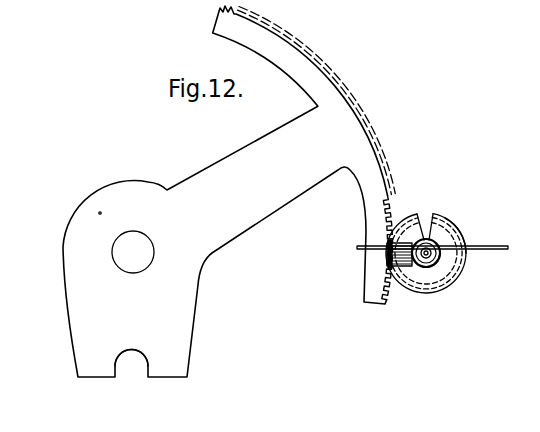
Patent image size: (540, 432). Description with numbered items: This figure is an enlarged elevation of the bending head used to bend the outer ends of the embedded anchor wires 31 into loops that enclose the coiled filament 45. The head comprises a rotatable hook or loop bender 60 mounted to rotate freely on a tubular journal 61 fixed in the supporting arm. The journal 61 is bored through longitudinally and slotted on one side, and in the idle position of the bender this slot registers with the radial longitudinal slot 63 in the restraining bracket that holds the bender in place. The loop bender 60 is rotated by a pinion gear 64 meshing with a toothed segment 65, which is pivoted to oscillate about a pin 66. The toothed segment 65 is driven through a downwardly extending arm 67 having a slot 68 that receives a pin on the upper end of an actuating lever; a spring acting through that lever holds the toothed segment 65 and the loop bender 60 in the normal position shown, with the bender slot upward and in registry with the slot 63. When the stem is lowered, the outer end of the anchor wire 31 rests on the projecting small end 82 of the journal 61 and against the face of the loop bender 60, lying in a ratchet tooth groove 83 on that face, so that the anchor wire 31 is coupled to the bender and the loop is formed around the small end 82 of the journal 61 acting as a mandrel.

The anchor wire 31 is at (506, 245).
The coiled filament 45 is at (424, 257).
The loop bender 60 is at (460, 277).
The tubular journal 61 is at (428, 267).
The radial longitudinal slot 63 is at (427, 226).
The pinion gear 64 is at (457, 232).
The toothed segment 65 is at (362, 142).
The pin 66 is at (138, 240).
The downwardly extending arm 67 is at (183, 347).
The slot 68 is at (133, 367).
The small end 82 is at (443, 258).
The ratchet tooth groove 83 is at (399, 228).